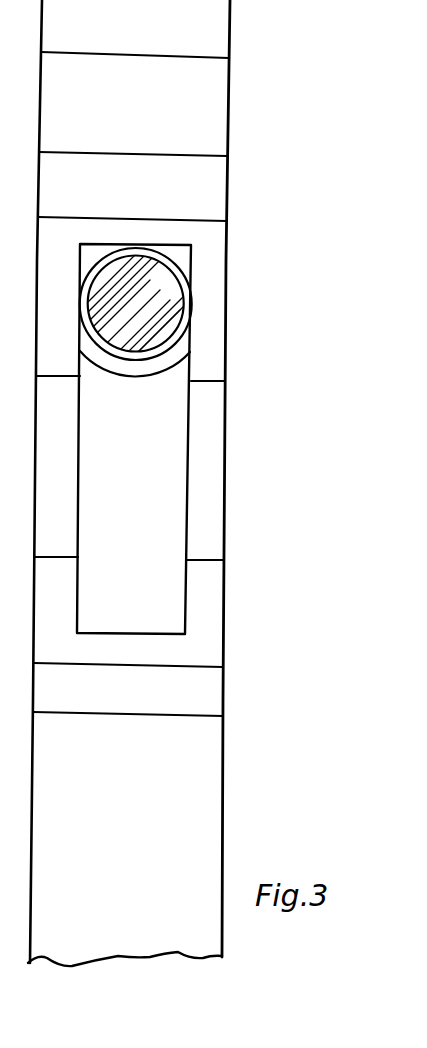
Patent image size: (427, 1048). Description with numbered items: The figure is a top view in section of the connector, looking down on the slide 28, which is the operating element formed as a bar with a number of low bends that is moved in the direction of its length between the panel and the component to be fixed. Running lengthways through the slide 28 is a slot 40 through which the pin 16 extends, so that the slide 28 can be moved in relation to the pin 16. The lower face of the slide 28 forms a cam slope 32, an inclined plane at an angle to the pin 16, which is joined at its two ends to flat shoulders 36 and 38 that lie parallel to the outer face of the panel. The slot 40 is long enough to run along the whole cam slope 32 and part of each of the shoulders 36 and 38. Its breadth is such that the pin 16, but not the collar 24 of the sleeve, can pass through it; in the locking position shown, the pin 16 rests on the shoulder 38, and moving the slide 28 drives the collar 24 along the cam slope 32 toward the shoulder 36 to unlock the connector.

The slide 28 is at (228, 105).
The shoulder 38 is at (207, 249).
The pin 16 is at (152, 298).
The collar 24 is at (165, 357).
The cam slope 32 is at (200, 472).
The slot 40 is at (143, 520).
The shoulder 36 is at (202, 640).